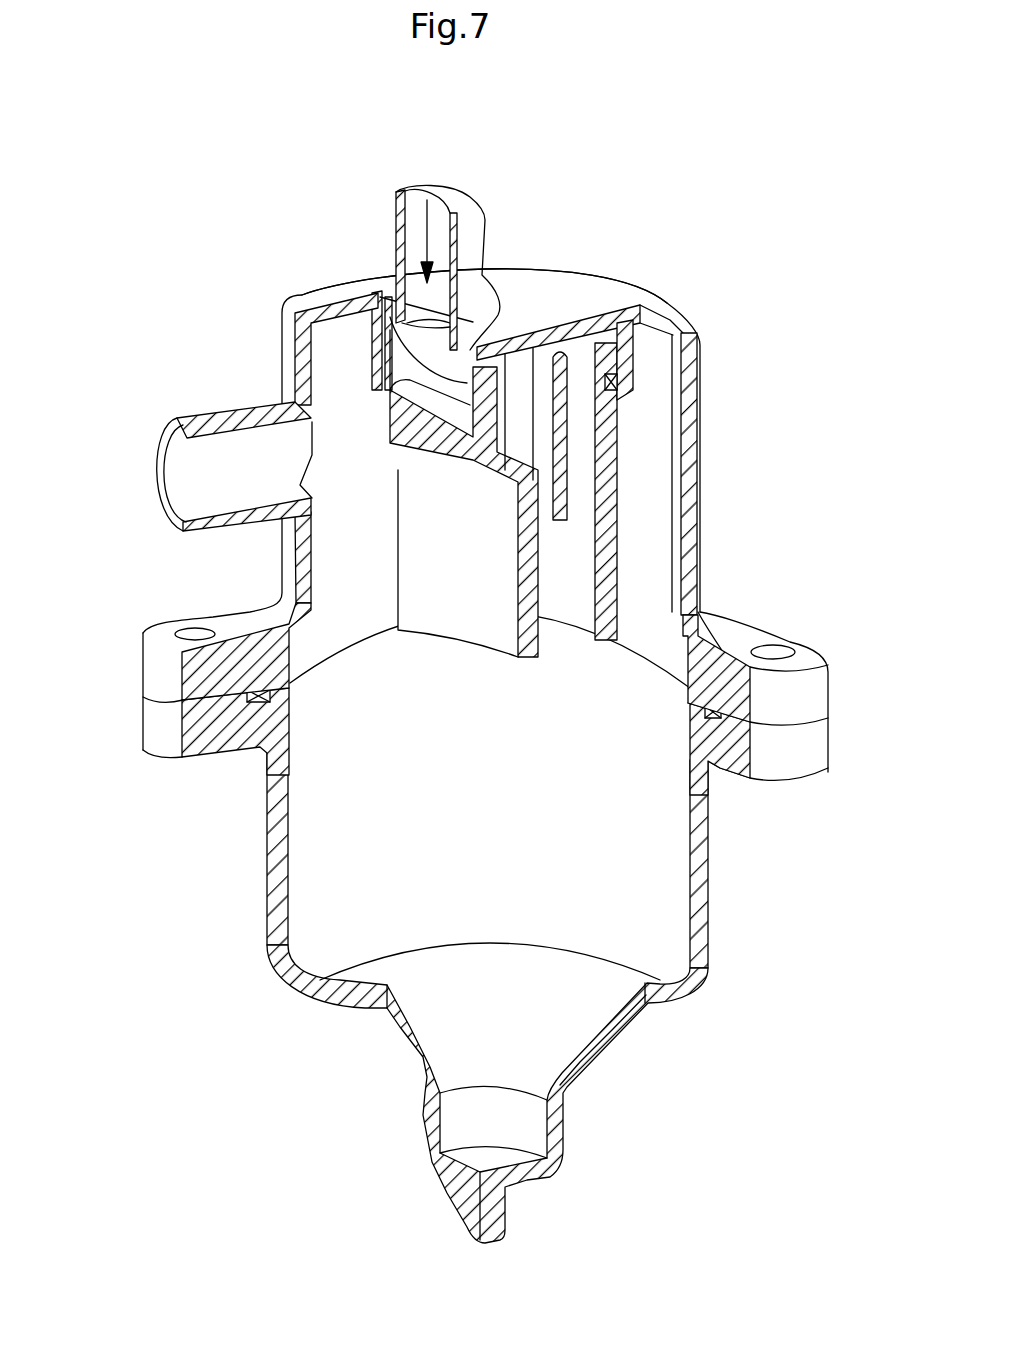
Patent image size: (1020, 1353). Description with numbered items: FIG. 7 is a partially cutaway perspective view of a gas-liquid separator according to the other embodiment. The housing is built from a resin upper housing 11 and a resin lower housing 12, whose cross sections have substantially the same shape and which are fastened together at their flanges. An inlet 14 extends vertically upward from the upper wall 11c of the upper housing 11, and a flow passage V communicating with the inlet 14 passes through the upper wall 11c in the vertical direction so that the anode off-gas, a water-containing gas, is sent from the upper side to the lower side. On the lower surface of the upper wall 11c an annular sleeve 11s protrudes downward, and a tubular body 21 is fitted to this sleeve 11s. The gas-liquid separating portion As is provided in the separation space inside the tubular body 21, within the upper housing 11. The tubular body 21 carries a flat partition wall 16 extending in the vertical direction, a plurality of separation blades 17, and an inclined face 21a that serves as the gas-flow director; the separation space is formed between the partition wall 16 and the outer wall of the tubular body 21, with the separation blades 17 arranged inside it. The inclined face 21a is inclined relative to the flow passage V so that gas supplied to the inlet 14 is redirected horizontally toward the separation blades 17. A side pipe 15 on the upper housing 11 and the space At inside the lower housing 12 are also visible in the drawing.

The upper housing 11 is at (697, 452).
The upper wall 11c is at (553, 287).
The annular sleeve 11s is at (630, 367).
The lower housing 12 is at (708, 838).
The inlet 14 is at (443, 200).
The side outlet pipe 15 is at (158, 450).
The partition wall 16 is at (460, 598).
The separation blades 17 is at (570, 477).
The tubular body 21 is at (613, 568).
The inclined face 21a is at (445, 400).
The flow passage V is at (427, 213).
The gas-liquid separating portion As is at (557, 624).
The tank space At is at (378, 910).